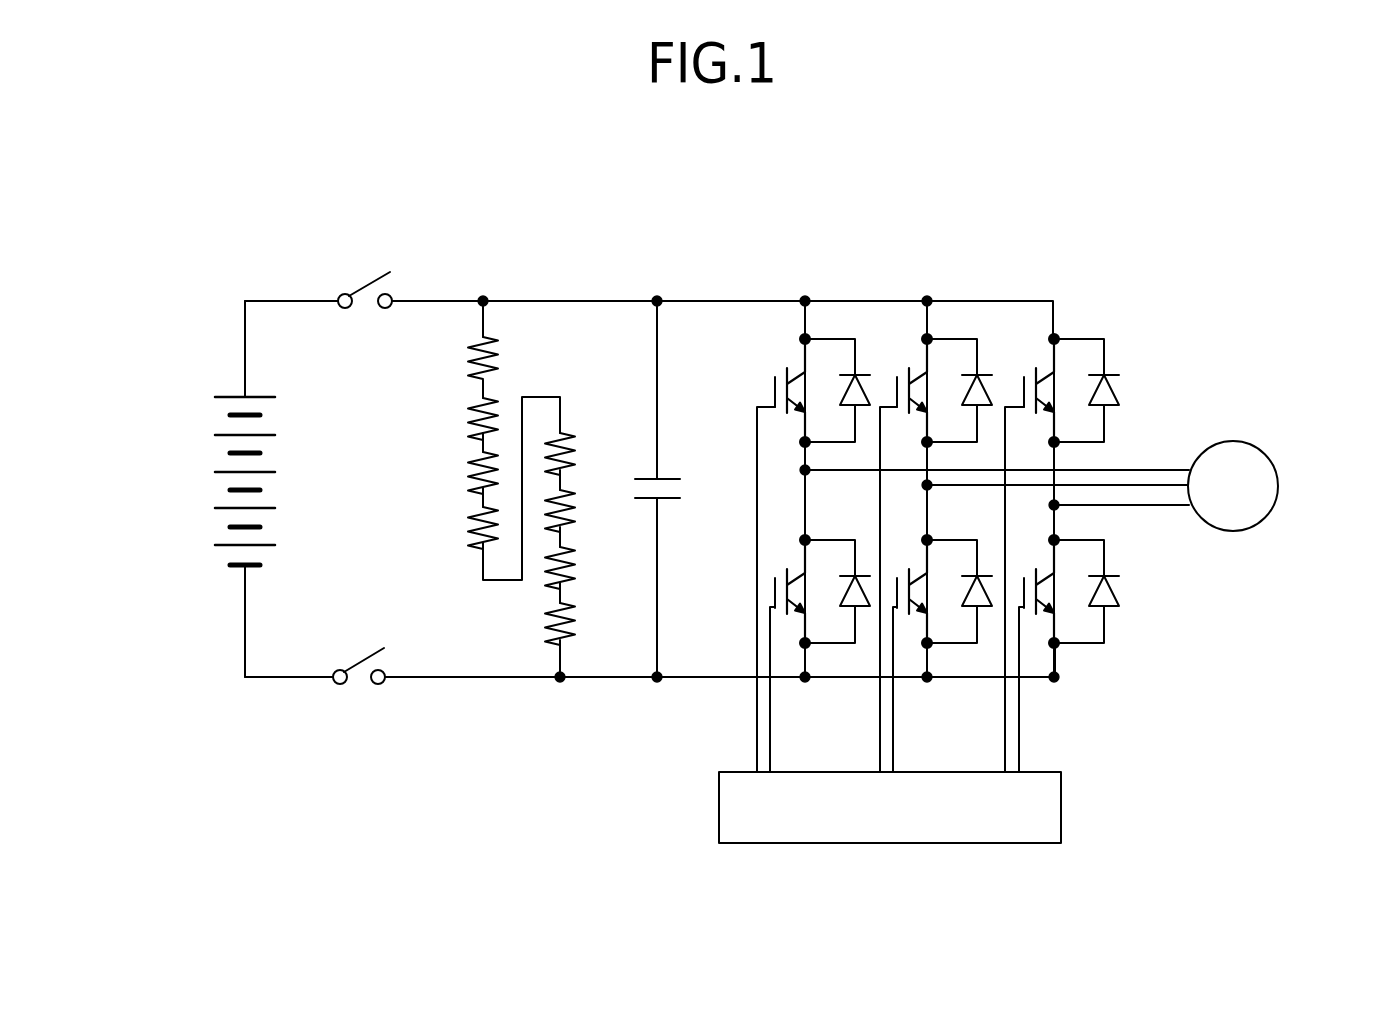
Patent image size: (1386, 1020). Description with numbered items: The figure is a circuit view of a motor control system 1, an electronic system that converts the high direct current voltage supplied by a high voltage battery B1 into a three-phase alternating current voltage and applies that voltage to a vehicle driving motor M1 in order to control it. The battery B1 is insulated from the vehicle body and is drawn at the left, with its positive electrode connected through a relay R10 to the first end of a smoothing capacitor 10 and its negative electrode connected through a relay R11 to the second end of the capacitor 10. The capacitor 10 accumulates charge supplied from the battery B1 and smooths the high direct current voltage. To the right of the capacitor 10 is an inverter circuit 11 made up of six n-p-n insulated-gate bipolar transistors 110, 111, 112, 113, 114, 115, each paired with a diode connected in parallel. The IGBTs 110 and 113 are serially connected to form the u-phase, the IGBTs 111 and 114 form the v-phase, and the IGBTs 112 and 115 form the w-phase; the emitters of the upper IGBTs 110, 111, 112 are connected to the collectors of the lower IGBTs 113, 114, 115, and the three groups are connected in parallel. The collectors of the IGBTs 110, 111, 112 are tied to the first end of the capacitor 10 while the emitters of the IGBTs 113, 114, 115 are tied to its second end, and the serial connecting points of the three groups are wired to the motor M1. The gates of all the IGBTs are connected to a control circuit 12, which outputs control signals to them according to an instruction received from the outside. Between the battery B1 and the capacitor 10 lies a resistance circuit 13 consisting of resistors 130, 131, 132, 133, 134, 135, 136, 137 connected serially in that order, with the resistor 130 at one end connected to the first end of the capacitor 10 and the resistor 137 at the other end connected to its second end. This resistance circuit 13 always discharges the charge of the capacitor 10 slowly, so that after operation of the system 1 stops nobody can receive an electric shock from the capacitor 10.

The motor control system 1 is at (911, 185).
The high voltage battery B1 is at (217, 390).
The relay R10 is at (361, 273).
The relay R11 is at (361, 639).
The resistance circuit 13 is at (531, 290).
The resistor 130 is at (465, 362).
The resistor 131 is at (465, 412).
The resistor 132 is at (465, 467).
The resistor 133 is at (465, 522).
The resistor 134 is at (577, 452).
The resistor 135 is at (575, 508).
The resistor 136 is at (575, 562).
The resistor 137 is at (575, 620).
The smoothing capacitor 10 is at (662, 474).
The inverter circuit 11 is at (913, 290).
The IGBT 110 is at (782, 362).
The IGBT 111 is at (904, 362).
The IGBT 112 is at (1029, 362).
The IGBT 113 is at (783, 625).
The IGBT 114 is at (905, 625).
The IGBT 115 is at (1030, 625).
The control circuit 12 is at (1048, 811).
The vehicle driving motor M1 is at (1240, 455).